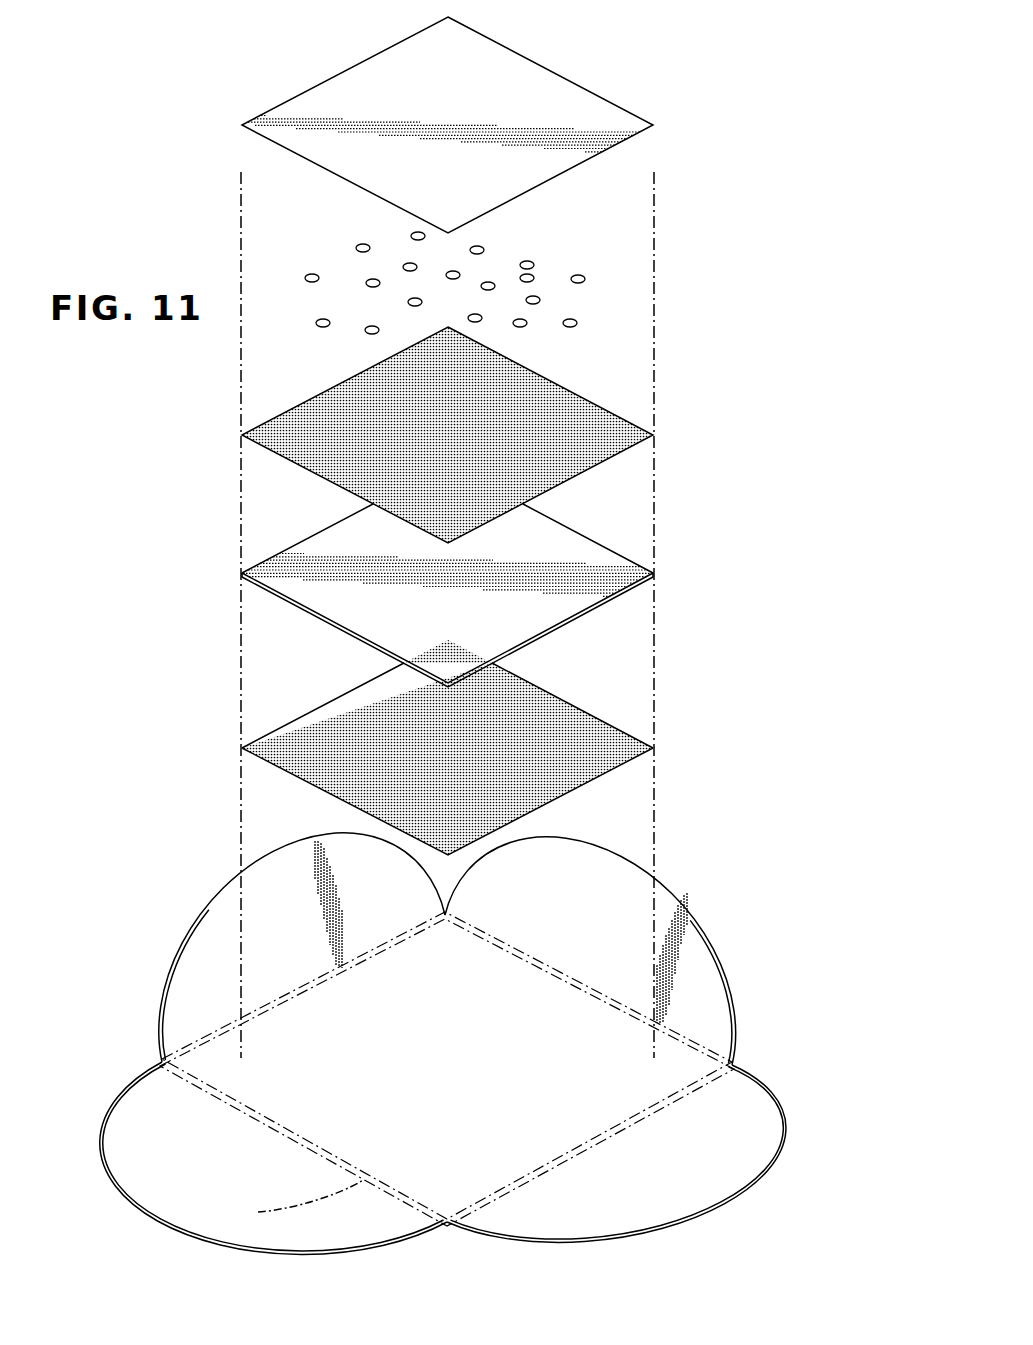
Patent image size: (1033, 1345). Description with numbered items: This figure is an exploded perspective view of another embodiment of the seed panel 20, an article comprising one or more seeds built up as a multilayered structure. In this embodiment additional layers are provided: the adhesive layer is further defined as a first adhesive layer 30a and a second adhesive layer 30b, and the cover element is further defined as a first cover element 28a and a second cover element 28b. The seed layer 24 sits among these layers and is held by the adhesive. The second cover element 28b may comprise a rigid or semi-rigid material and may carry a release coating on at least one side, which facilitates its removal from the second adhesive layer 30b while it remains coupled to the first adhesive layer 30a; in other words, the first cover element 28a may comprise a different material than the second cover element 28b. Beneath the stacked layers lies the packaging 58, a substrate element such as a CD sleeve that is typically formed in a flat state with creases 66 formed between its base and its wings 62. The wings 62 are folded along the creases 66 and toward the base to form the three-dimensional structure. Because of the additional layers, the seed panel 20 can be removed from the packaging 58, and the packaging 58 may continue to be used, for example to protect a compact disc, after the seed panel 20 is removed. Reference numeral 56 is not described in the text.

The seed panel 20 is at (629, 92).
The seed layer 24 is at (579, 276).
The first cover element 28a is at (477, 63).
The second cover element 28b is at (597, 560).
The first adhesive layer 30a is at (592, 425).
The second adhesive layer 30b is at (595, 740).
The enclosure sheet 56 is at (199, 900).
The packaging 58 is at (465, 1175).
The wings 62 is at (187, 983).
The creases 66 is at (310, 1145).